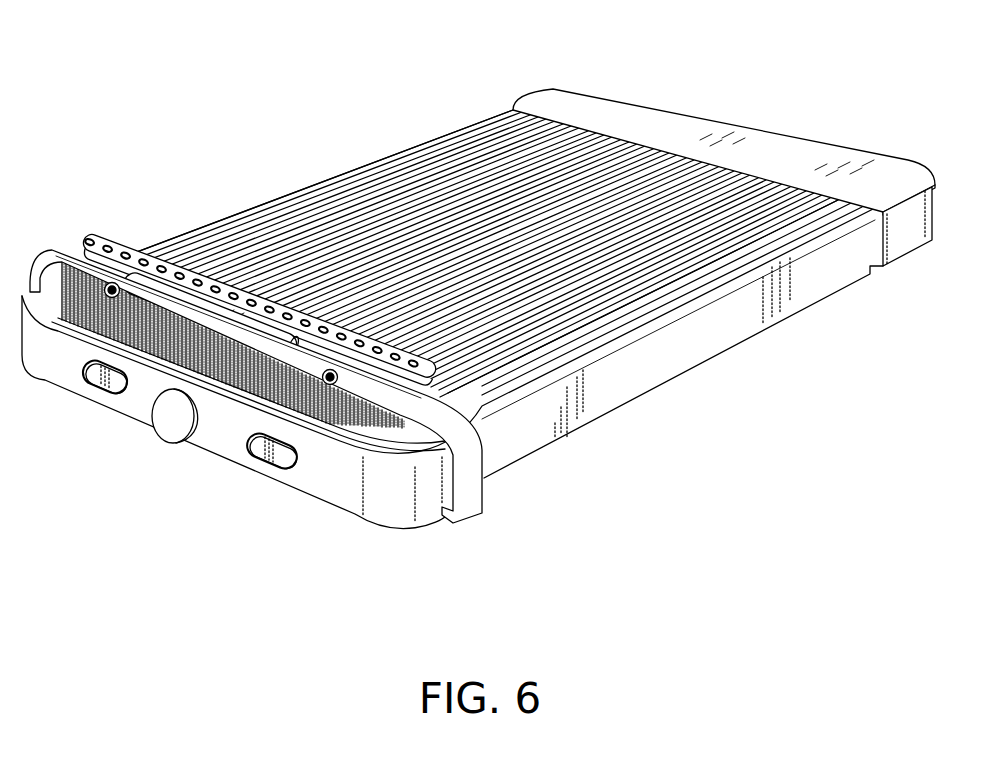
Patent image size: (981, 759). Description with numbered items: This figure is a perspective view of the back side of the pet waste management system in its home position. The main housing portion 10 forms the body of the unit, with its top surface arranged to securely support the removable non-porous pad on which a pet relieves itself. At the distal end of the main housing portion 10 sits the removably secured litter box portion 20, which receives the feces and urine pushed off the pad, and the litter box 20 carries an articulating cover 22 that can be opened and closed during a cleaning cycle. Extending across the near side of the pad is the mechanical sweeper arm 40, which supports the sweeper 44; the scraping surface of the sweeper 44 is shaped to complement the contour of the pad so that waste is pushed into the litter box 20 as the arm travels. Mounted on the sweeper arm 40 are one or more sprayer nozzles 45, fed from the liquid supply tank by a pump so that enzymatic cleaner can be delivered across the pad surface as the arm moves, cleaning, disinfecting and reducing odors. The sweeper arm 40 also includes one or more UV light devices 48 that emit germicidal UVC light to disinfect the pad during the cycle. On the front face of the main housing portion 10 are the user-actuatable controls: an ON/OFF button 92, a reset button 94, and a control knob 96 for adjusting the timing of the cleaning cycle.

The main housing portion 10 is at (705, 333).
The litter box portion 20 is at (900, 240).
The articulating cover 22 is at (748, 150).
The mechanical sweeper arm 40 is at (472, 440).
The sweeper 44 is at (84, 236).
The sprayer nozzles 45 is at (100, 287).
The UV light devices 48 is at (190, 308).
The ON/OFF button 92 is at (96, 382).
The reset button 94 is at (266, 462).
The control knob 96 is at (172, 428).